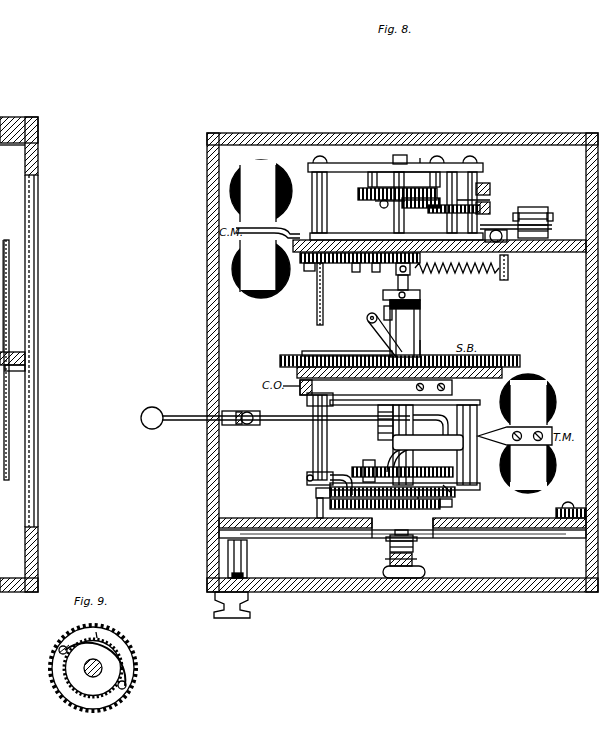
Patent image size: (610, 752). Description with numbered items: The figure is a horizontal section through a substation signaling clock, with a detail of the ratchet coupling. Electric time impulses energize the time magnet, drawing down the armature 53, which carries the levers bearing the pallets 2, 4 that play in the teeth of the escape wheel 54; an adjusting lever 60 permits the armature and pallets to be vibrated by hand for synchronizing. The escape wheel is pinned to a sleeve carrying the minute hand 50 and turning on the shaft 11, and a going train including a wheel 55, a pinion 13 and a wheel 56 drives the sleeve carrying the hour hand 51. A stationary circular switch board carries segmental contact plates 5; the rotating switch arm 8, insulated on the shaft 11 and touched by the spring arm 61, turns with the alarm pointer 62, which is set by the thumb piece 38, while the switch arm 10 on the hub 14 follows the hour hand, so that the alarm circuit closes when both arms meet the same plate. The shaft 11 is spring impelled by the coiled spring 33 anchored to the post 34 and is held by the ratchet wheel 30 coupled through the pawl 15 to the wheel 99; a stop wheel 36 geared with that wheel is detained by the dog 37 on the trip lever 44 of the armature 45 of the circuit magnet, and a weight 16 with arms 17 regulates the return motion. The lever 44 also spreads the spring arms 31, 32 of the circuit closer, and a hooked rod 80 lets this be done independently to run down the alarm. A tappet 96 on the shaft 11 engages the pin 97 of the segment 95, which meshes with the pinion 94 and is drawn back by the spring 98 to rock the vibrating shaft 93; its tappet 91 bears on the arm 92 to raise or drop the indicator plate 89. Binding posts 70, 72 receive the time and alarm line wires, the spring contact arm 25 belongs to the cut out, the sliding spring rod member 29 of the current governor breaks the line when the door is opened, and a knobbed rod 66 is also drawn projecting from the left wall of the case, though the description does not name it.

In FIG. 8, the pallet 2 is at (390, 460).
In FIG. 8, the pallet 4 is at (449, 493).
In FIG. 8, the segmental metal contact plate 5 is at (400, 355).
In FIG. 8, the rotating switch arm 8 is at (421, 330).
In FIG. 8, the switch arm 10 is at (332, 351).
In FIG. 8, the shaft 11 is at (392, 158).
In FIG. 8, the pinion 13 is at (317, 508).
In FIG. 8, the hub 14 is at (420, 344).
In FIG. 8, the pawl 15 is at (380, 203).
In FIG. 9, the pawl 15 is at (61, 648).
In FIG. 8, the weight 16 is at (489, 184).
In FIG. 8, the arm 17 is at (491, 208).
In FIG. 8, the spring contact arm 25 is at (376, 387).
In FIG. 8, the sliding spring rod member 29 is at (248, 576).
In FIG. 8, the ratchet wheel 30 is at (418, 208).
In FIG. 9, the ratchet wheel 30 is at (93, 668).
In FIG. 8, the spring arm 31 is at (544, 210).
In FIG. 8, the spring arm 32 is at (517, 212).
In FIG. 8, the coiled spring 33 is at (404, 179).
In FIG. 8, the post 34 is at (417, 155).
In FIG. 8, the stop wheel 36 is at (443, 213).
In FIG. 8, the dog 37 is at (460, 206).
In FIG. 8, the thumb piece 38 is at (215, 472).
In FIG. 8, the trip arm or lever 44 is at (290, 229).
In FIG. 8, the armature 45 is at (261, 229).
In FIG. 8, the minute hand 50 is at (390, 545).
In FIG. 8, the hour hand 51 is at (414, 540).
In FIG. 8, the armature 53 is at (517, 433).
In FIG. 8, the escape wheel 54 is at (420, 467).
In FIG. 8, the wheel 55 is at (316, 494).
In FIG. 8, the wheel 56 is at (452, 504).
In FIG. 8, the adjusting lever 60 is at (383, 420).
In FIG. 8, the spring arm 61 is at (370, 314).
In FIG. 8, the alarm pointer 62 is at (7, 312).
In FIG. 8, the handle rod 66 is at (275, 423).
In FIG. 8, the binding post 70 is at (7, 350).
In FIG. 8, the binding post 72 is at (419, 493).
In FIG. 8, the hooked rod 80 is at (509, 260).
In FIG. 8, the indicator plate 89 is at (535, 505).
In FIG. 8, the tappet 91 is at (348, 478).
In FIG. 8, the arm 92 is at (368, 470).
In FIG. 8, the vibrating shaft 93 is at (317, 305).
In FIG. 8, the pinion 94 is at (309, 271).
In FIG. 8, the segment 95 is at (338, 263).
In FIG. 8, the tappet 96 is at (396, 270).
In FIG. 8, the pin 97 is at (398, 282).
In FIG. 8, the spring 98 is at (457, 278).
In FIG. 8, the wheel 99 is at (358, 193).
In FIG. 9, the wheel 99 is at (129, 668).